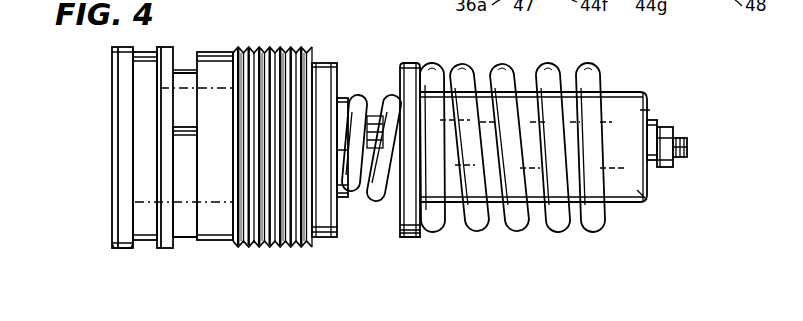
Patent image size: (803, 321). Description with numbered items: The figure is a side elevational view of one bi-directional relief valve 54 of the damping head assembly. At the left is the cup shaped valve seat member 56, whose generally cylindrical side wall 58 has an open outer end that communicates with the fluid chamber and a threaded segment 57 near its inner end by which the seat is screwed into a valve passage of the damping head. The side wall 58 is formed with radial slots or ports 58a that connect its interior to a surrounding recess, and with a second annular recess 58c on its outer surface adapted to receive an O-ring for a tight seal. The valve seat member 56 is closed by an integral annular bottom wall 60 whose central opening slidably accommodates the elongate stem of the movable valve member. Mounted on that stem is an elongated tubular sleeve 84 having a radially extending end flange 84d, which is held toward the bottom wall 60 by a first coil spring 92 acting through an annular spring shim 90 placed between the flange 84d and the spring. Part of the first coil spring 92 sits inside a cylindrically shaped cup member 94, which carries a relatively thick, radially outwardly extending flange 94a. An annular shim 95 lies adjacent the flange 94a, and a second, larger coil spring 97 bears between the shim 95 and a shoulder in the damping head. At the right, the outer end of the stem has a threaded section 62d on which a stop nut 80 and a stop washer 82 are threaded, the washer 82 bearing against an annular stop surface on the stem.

The bi-directional relief valve 54 is at (391, 271).
The cup shaped valve seat member 56 is at (244, 47).
The threaded segment 57 is at (267, 247).
The cylindrical side wall 58 is at (207, 72).
The radial slots or ports 58a is at (178, 238).
The second annular recess 58c is at (140, 248).
The bottom wall 60 is at (321, 63).
The threaded section 62d is at (687, 156).
The stop nut 80 is at (672, 131).
The stop washer 82 is at (652, 121).
The elongated tubular sleeve 84 is at (391, 172).
The end flange 84d is at (341, 98).
The annular spring shim 90 is at (348, 98).
The first coil spring 92 is at (367, 193).
The cylindrically shaped cup member 94 is at (622, 103).
The flange 94a is at (405, 63).
The annular shim 95 is at (424, 63).
The second coil spring 97 is at (500, 63).